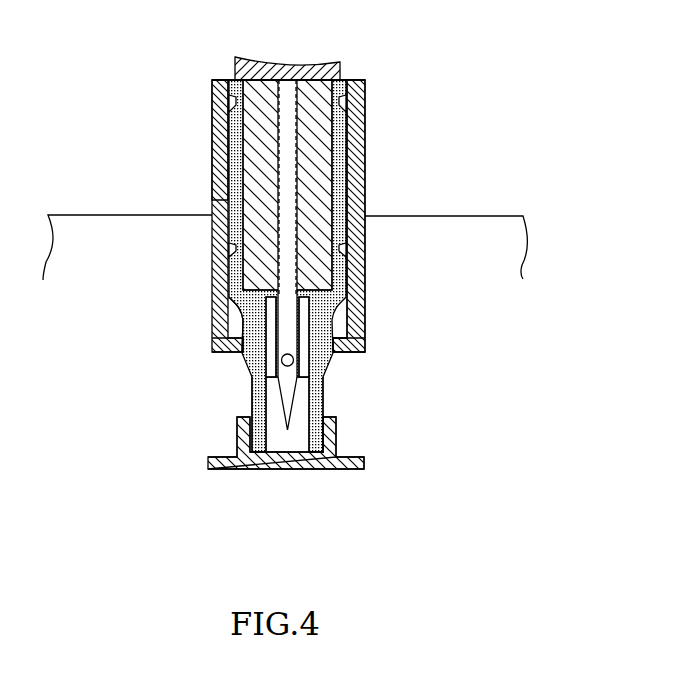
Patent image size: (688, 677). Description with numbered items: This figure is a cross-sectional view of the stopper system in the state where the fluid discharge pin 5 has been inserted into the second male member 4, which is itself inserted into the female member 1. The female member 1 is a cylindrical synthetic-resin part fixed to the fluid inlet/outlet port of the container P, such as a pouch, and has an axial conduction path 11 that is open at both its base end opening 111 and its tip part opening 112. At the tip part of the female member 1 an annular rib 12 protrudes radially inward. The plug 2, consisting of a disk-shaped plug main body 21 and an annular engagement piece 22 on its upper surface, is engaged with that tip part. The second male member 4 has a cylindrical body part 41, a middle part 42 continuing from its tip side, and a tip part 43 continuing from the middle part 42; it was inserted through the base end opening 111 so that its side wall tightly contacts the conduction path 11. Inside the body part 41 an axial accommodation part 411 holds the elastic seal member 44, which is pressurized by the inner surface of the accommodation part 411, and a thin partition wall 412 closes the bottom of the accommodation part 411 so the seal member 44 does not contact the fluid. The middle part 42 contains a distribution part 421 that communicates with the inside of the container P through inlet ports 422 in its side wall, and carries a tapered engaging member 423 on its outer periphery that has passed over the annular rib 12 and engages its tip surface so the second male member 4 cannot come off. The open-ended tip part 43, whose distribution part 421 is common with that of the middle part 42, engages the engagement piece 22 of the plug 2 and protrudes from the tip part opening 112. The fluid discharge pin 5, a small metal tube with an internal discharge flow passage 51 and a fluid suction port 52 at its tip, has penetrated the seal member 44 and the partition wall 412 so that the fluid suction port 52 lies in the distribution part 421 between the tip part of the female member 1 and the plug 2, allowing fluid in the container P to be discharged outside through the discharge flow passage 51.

The female member 1 is at (371, 150).
The conduction path 11 is at (366, 142).
The base end opening 111 is at (234, 78).
The tip part opening 112 is at (238, 362).
The annular rib 12 is at (336, 330).
The plug 2 is at (347, 469).
The plug main body 21 is at (312, 469).
The engagement piece 22 is at (284, 453).
The second male member 4 is at (366, 117).
The body part 41 is at (366, 194).
The accommodation part 411 is at (216, 121).
The partition wall 412 is at (237, 295).
The middle part 42 is at (348, 315).
The distribution part 421 is at (278, 398).
The inlet ports 422 is at (312, 386).
The engaging member 423 is at (333, 376).
The tip part 43 is at (324, 424).
The seal member 44 is at (240, 168).
The fluid discharge pin 5 is at (342, 77).
The discharge flow passage 51 is at (273, 200).
The fluid suction port 52 is at (240, 320).
The container P is at (470, 216).